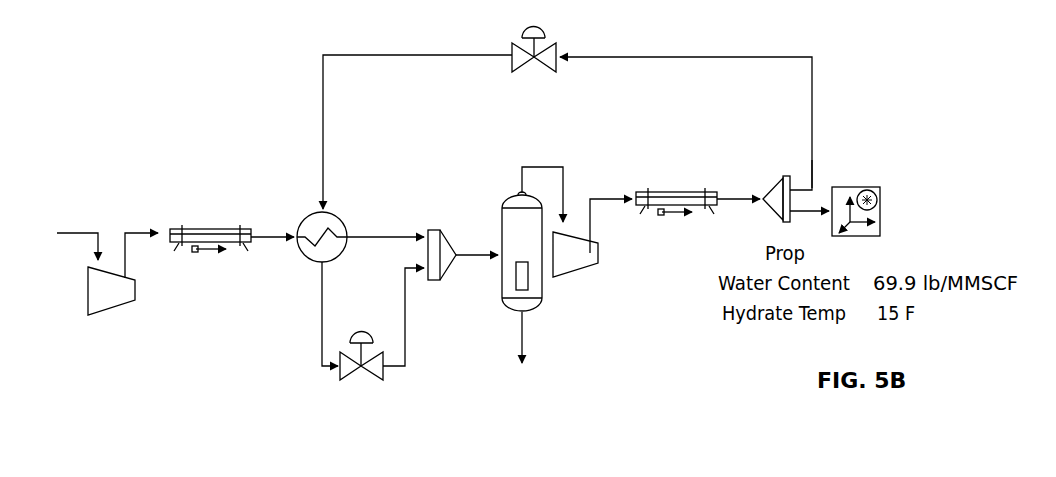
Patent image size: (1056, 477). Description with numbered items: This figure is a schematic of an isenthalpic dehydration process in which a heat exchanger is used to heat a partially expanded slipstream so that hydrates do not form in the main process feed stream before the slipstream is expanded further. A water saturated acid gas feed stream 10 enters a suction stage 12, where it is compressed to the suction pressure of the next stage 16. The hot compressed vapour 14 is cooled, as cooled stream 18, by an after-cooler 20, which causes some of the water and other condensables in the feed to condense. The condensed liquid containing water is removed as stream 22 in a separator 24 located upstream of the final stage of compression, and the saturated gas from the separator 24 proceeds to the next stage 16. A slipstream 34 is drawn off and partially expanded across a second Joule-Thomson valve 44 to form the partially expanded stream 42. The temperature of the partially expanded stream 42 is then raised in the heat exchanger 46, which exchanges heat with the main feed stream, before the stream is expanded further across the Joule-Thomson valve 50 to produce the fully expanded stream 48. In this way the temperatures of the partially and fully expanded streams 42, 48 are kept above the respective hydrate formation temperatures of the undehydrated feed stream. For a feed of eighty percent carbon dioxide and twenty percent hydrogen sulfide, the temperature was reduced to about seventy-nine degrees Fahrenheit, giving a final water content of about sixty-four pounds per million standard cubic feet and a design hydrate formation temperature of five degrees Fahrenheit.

The water saturated acid gas feed stream 10 is at (76, 232).
The suction stage 12 is at (112, 316).
The hot compressed vapour 14 is at (140, 231).
The next stage 16 is at (575, 272).
The cooled stream 18 is at (262, 243).
The after-cooler 20 is at (210, 226).
The condensed liquid removal stream 22 is at (523, 340).
The separator 24 is at (510, 198).
The slipstream 34 is at (814, 107).
The partially expanded stream 42 is at (411, 53).
The second Joule-Thomson valve 44 is at (560, 49).
The heat exchanger 46 is at (304, 214).
The fully expanded stream 48 is at (405, 312).
The Joule-Thomson valve (TCV) 50 is at (385, 378).